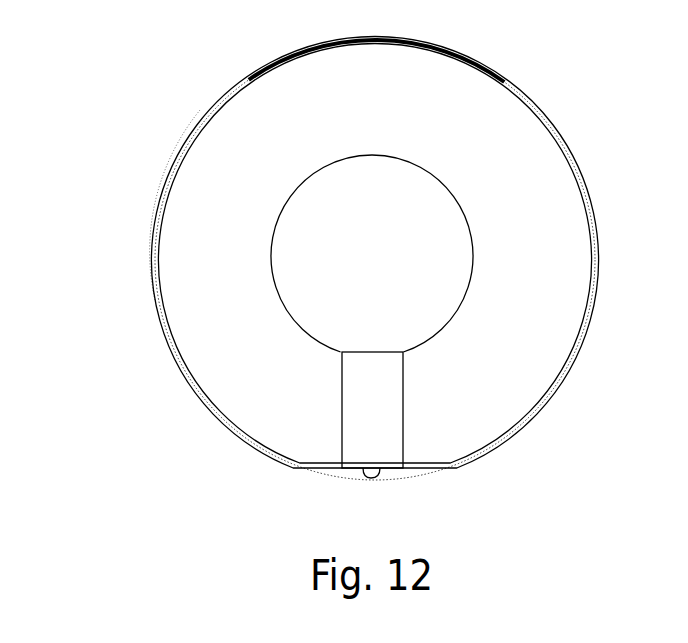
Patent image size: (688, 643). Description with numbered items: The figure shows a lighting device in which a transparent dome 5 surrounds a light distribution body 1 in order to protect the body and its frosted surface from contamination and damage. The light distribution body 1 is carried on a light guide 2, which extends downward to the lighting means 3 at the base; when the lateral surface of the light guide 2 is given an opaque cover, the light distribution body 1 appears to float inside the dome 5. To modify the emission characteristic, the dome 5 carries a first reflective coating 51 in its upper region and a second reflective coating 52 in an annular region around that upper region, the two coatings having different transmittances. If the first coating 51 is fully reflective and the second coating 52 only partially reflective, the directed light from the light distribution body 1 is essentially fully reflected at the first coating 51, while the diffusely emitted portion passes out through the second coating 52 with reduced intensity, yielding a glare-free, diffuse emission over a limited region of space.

The light distribution body 1 is at (470, 238).
The light guide 2 is at (403, 380).
The lighting means 3 is at (400, 471).
The dome 5 is at (152, 268).
The first reflective coating 51 is at (263, 62).
The second reflective coating 52 is at (177, 151).